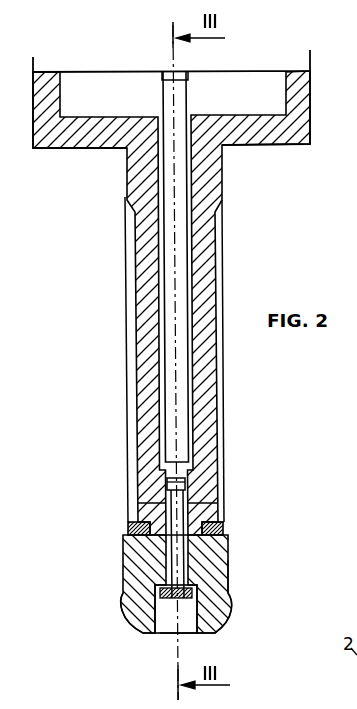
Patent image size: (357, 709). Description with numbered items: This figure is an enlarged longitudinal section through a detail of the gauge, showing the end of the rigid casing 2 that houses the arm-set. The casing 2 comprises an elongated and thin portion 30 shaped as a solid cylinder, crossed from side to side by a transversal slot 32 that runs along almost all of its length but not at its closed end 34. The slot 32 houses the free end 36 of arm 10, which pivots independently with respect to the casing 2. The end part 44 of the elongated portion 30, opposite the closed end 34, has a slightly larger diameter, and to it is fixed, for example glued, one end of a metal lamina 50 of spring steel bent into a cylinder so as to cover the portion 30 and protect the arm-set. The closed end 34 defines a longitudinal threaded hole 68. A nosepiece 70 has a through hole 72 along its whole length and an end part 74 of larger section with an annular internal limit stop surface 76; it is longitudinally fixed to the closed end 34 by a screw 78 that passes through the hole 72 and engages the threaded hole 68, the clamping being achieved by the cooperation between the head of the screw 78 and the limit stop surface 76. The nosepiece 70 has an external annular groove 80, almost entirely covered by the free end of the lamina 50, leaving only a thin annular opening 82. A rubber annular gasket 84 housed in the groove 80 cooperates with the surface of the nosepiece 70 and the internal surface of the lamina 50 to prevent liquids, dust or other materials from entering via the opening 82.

The casing 2 is at (64, 149).
The arm 10 is at (186, 77).
The elongated portion 30 is at (141, 287).
The transversal slot 32 is at (157, 312).
The free end 36 is at (170, 347).
The end part 44 is at (127, 176).
The metal lamina 50 is at (224, 221).
The closed end 34 is at (168, 498).
The threaded hole 68 is at (186, 480).
The nosepiece 70 is at (226, 633).
The through hole 72 is at (229, 588).
The end part 74 is at (177, 634).
The limit stop surface 76 is at (125, 550).
The screw 78 is at (163, 636).
The external annular groove 80 is at (226, 534).
The annular opening 82 is at (128, 533).
The annular gasket 84 is at (249, 502).